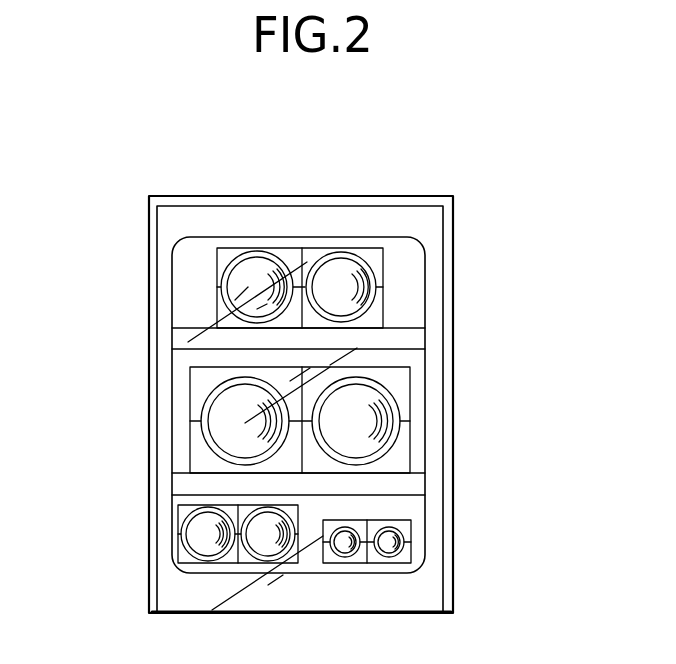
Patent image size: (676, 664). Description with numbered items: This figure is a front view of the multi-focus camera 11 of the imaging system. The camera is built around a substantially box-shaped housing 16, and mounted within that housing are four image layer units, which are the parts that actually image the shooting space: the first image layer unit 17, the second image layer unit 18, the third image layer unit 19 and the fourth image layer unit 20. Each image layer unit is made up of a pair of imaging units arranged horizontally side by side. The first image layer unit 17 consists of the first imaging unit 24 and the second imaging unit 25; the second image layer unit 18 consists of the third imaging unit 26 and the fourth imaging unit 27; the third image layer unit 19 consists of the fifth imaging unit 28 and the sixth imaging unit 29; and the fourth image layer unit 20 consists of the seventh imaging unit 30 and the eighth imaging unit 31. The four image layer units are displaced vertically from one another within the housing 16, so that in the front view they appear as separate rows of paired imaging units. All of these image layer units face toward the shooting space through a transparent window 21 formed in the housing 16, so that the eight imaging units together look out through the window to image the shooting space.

The multi-focus camera 11 is at (293, 196).
The housing 16 is at (158, 221).
The transparent window 21 is at (187, 293).
The third image layer unit 19 is at (373, 295).
The fifth imaging unit 28 is at (363, 268).
The sixth imaging unit 29 is at (277, 313).
The fourth image layer unit 20 is at (374, 410).
The seventh imaging unit 30 is at (393, 405).
The eighth imaging unit 31 is at (258, 453).
The second image layer unit 18 is at (185, 556).
The third imaging unit 26 is at (188, 533).
The fourth imaging unit 27 is at (188, 552).
The first image layer unit 17 is at (440, 541).
The first imaging unit 24 is at (397, 533).
The second imaging unit 25 is at (403, 563).